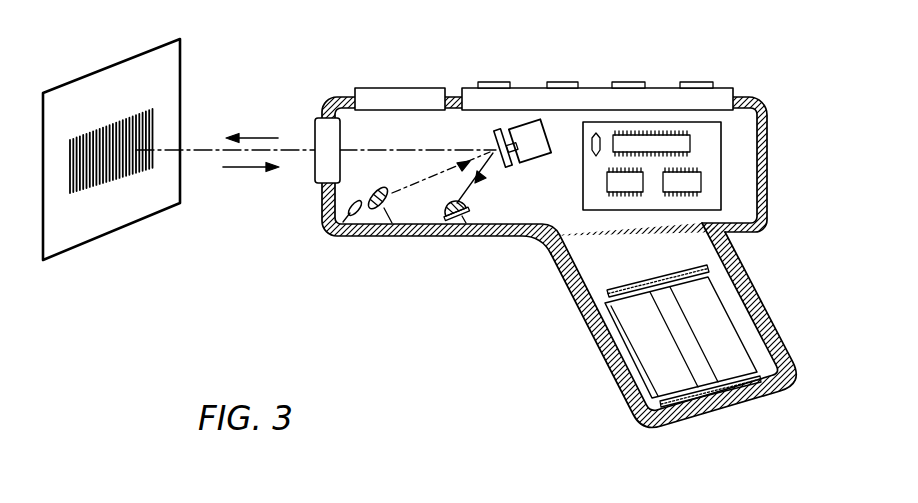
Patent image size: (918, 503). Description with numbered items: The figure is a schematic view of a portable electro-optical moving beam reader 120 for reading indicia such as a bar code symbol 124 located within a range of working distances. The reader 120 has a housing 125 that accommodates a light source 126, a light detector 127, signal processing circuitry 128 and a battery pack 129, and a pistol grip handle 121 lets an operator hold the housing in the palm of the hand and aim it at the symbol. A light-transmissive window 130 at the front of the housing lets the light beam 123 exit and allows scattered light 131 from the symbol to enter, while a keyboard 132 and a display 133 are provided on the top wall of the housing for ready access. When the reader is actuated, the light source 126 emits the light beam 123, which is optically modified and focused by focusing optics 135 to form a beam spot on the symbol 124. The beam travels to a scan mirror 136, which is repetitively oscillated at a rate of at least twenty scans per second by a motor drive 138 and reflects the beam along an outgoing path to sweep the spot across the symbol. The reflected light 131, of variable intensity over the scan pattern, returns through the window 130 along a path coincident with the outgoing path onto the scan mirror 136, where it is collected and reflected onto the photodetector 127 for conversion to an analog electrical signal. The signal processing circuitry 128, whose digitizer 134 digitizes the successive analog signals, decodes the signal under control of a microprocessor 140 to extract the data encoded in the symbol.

The moving beam reader 120 is at (437, 300).
The pistol grip handle 121 is at (669, 332).
The light beam 123 is at (257, 137).
The bar code symbol 124 is at (150, 152).
The housing 125 is at (767, 217).
The light source 126 is at (340, 218).
The light detector 127 is at (471, 223).
The signal processing circuitry 128 is at (717, 157).
The battery pack 129 is at (718, 327).
The light-transmissive window 130 is at (310, 117).
The scattered light 131 is at (245, 168).
The keyboard 132 is at (668, 88).
The display 133 is at (378, 88).
The digitizer 134 is at (622, 186).
The focusing optics 135 is at (388, 210).
The scan mirror 136 is at (495, 148).
The motor drive 138 is at (540, 162).
The microprocessor 140 is at (702, 185).